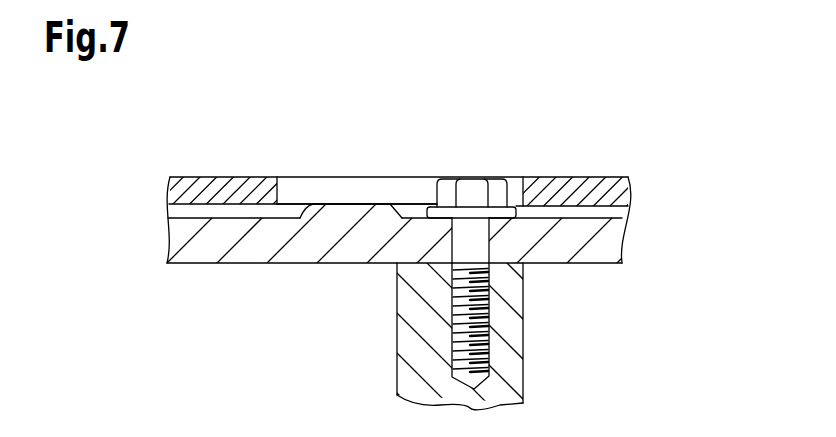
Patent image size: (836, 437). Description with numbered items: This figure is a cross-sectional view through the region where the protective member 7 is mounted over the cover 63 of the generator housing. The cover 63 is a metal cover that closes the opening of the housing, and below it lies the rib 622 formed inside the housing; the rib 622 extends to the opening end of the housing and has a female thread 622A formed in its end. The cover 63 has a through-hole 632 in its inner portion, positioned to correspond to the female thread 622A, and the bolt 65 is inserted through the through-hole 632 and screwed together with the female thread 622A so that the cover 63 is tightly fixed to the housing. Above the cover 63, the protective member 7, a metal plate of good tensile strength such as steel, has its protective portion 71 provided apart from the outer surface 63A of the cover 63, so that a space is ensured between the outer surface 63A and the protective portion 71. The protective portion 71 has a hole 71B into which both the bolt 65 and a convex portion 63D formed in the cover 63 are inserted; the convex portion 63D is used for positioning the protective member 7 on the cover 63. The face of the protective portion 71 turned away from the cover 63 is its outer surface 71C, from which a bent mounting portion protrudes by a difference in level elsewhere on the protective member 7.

The protective member 7 is at (405, 148).
The cover 63 is at (293, 263).
The outer surface 63A is at (192, 217).
The convex portion 63D is at (346, 210).
The through-hole 632 is at (458, 237).
The bolt 65 is at (473, 188).
The protective portion 71 is at (219, 186).
The hole 71B is at (289, 187).
The outer surface 71C is at (254, 178).
The rib 622 is at (510, 367).
The female thread 622A is at (480, 314).